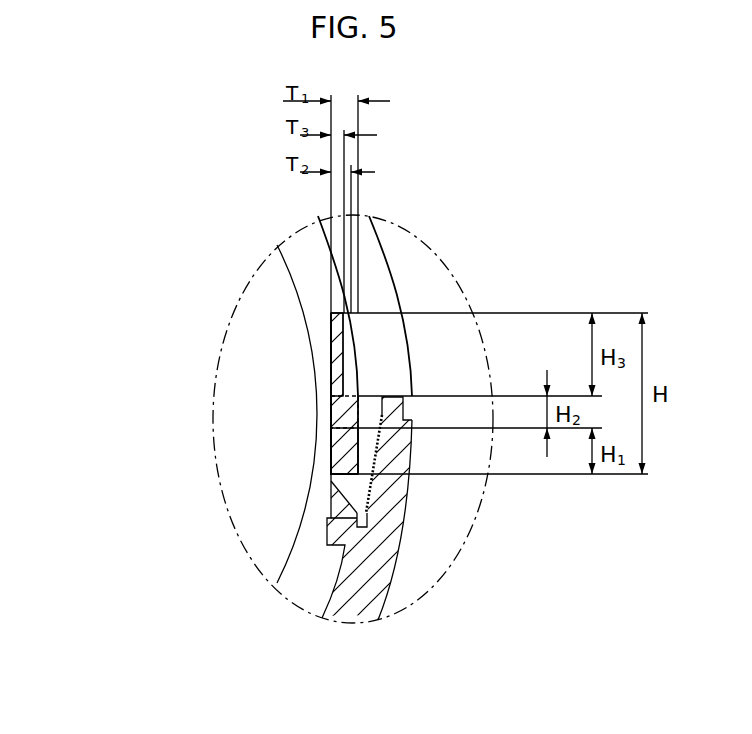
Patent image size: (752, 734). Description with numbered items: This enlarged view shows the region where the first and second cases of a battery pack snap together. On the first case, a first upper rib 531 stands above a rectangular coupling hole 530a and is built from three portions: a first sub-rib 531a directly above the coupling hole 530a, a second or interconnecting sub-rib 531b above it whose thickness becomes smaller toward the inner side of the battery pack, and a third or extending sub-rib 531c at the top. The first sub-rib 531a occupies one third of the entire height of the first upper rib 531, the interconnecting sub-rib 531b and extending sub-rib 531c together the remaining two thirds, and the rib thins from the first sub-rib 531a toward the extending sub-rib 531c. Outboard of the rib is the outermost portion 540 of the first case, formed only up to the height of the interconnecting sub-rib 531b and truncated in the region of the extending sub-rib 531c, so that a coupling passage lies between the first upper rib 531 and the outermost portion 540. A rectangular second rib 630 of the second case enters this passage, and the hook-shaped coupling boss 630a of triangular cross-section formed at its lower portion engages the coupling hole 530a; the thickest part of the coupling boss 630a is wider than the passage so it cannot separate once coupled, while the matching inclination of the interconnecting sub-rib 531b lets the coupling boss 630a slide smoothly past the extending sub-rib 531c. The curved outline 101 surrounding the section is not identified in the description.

The window (cover glass) 101 is at (273, 277).
The first upper rib 531 is at (201, 419).
The first sub-rib 531a is at (330, 463).
The second or interconnecting sub-rib 531b is at (342, 417).
The third or extending sub-rib 531c is at (330, 381).
The second rib 630 is at (464, 491).
The coupling boss 630a is at (370, 445).
The coupling hole 530a is at (339, 510).
The outermost portion of the first case 540 is at (405, 523).